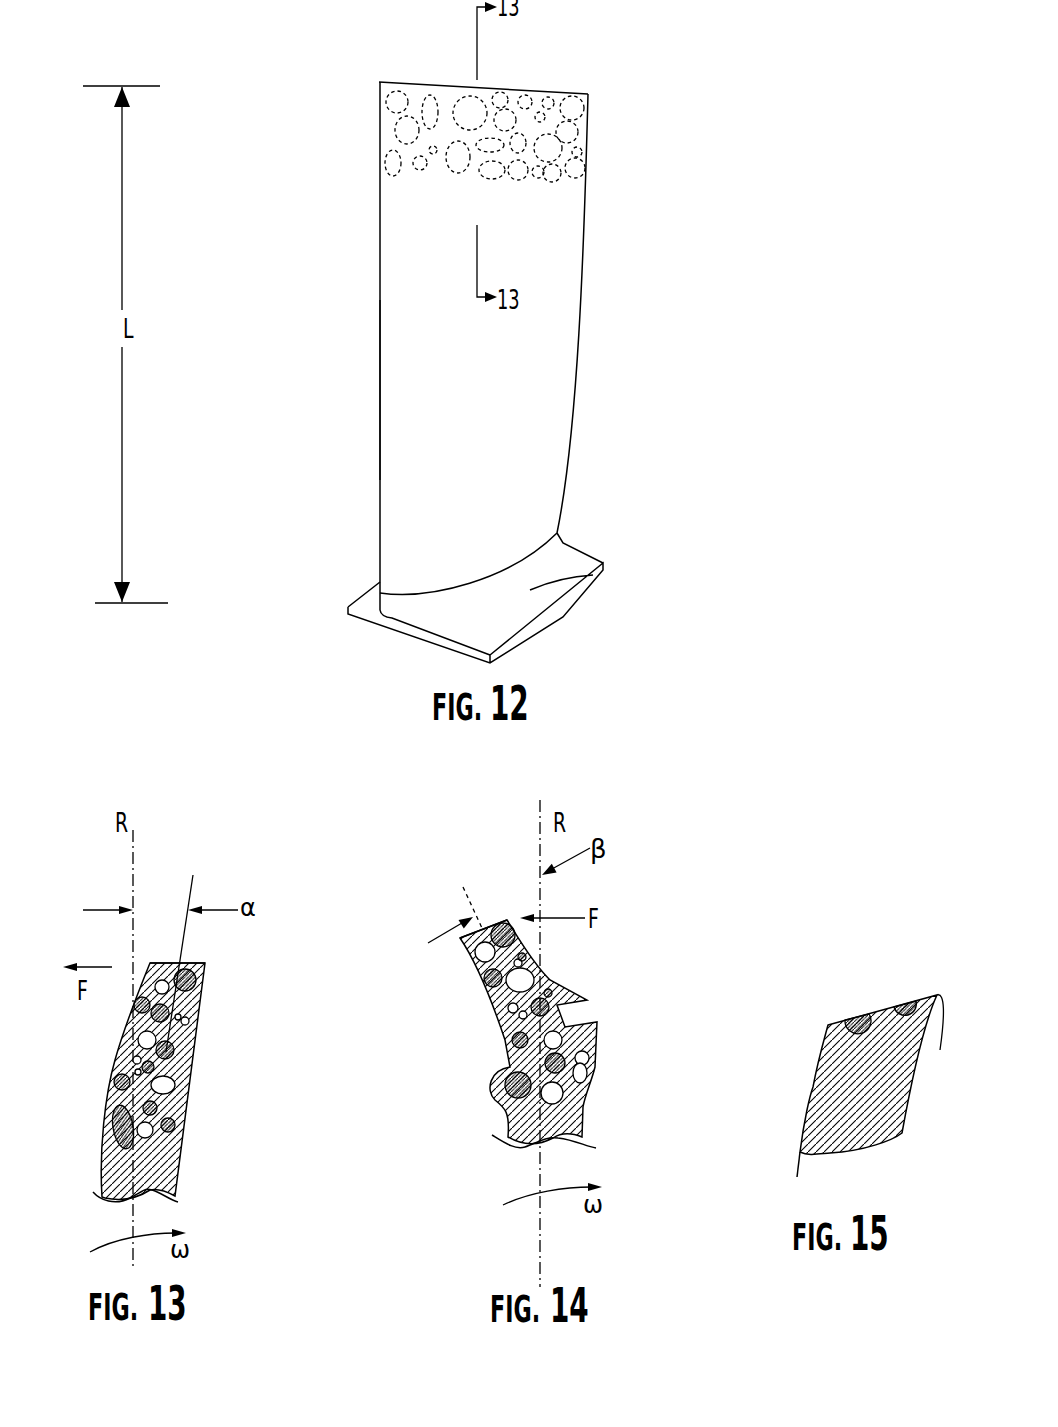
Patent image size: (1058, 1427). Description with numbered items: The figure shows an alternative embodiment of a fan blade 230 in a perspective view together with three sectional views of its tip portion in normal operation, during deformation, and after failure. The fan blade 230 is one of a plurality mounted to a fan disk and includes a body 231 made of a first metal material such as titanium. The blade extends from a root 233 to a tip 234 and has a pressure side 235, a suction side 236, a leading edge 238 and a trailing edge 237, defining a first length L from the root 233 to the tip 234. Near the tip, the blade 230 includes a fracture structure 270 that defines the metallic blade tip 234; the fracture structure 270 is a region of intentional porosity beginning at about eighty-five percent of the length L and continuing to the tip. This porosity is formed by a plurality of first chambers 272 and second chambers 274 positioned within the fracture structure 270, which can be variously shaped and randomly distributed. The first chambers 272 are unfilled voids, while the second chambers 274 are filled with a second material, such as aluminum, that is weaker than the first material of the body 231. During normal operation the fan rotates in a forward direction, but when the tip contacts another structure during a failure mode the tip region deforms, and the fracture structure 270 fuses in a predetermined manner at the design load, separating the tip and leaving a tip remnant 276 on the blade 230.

In FIG. 12, the fan blade 230 is at (712, 202).
In FIG. 12, the body 231 is at (400, 482).
In FIG. 12, the root 233 is at (593, 575).
In FIG. 12, the tip 234 is at (583, 96).
In FIG. 13, the tip 234 is at (192, 964).
In FIG. 14, the tip 234 is at (498, 925).
In FIG. 12, the pressure side 235 is at (515, 461).
In FIG. 13, the pressure side 235 is at (178, 1153).
In FIG. 12, the suction side 236 is at (380, 395).
In FIG. 12, the trailing edge 237 is at (580, 357).
In FIG. 12, the leading edge 238 is at (380, 337).
In FIG. 12, the fracture structure 270 is at (345, 136).
In FIG. 13, the fracture structure 270 is at (165, 1065).
In FIG. 14, the fracture structure 270 is at (560, 994).
In FIG. 12, the first chambers 272 is at (433, 95).
In FIG. 13, the first chambers 272 is at (177, 1080).
In FIG. 14, the first chambers 272 is at (592, 1033).
In FIG. 12, the second chambers 274 is at (483, 150).
In FIG. 13, the second chambers 274 is at (112, 1115).
In FIG. 14, the second chambers 274 is at (493, 1097).
In FIG. 15, the second chambers 274 is at (852, 1022).
In FIG. 15, the tip remnant 276 is at (944, 1039).